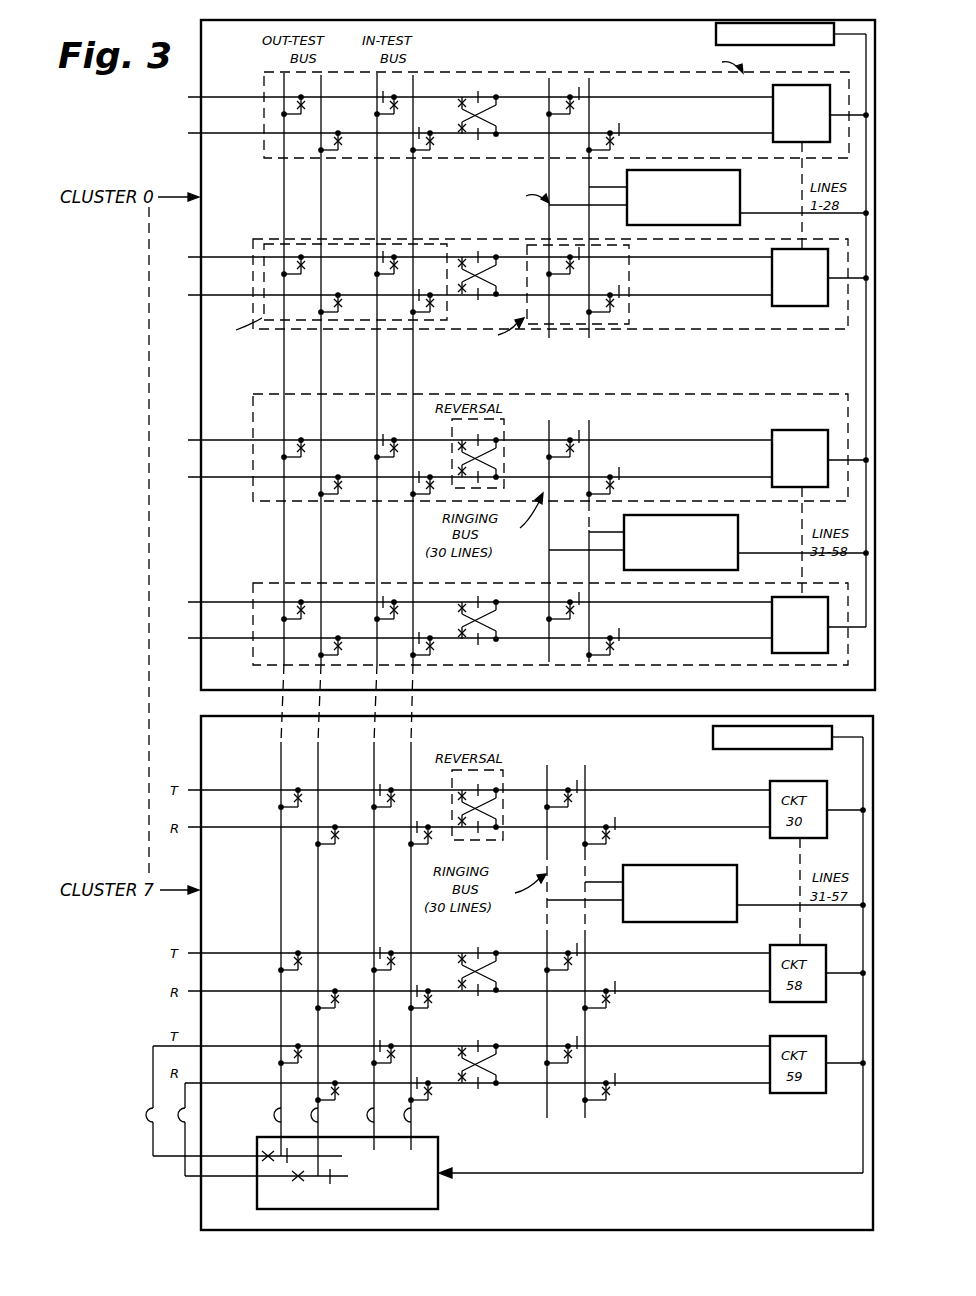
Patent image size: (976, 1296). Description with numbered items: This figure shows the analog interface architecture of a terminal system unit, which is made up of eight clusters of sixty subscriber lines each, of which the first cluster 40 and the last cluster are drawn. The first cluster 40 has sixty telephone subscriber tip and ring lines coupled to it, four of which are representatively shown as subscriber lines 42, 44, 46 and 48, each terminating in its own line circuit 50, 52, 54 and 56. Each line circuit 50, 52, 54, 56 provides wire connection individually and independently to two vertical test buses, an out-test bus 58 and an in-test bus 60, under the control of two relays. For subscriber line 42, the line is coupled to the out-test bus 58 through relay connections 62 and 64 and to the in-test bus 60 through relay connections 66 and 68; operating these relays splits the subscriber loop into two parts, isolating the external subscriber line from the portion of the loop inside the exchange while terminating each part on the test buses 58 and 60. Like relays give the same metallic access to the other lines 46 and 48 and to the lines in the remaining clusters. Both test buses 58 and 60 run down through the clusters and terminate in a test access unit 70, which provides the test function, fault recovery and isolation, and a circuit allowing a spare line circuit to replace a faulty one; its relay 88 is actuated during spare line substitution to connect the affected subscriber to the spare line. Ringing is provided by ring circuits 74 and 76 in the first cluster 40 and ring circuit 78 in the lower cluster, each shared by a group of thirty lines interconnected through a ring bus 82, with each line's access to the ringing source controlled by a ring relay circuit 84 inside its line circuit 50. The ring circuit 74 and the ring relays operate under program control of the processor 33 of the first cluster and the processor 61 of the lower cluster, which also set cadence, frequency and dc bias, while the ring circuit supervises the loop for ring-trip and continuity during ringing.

The processor and memory 33 is at (716, 34).
The cluster 0 40 is at (201, 74).
The subscriber line 42 is at (184, 125).
The subscriber line 44 is at (184, 286).
The subscriber line 46 is at (184, 469).
The subscriber line 48 is at (184, 631).
The line circuit 50 is at (770, 73).
The line circuit 52 is at (795, 330).
The line circuit 54 is at (758, 396).
The line circuit 56 is at (768, 668).
The out-test bus 58 is at (309, 78).
The in-test bus 60 is at (404, 78).
The processor 61 is at (713, 737).
The relay connection 62 is at (298, 112).
The relay connection 64 is at (337, 152).
The relay connection 66 is at (387, 112).
The relay connection 68 is at (422, 152).
The test access unit 70 is at (312, 1173).
The ring circuit 74 is at (740, 195).
The ring circuit 76 is at (738, 536).
The ring circuit 78 is at (737, 889).
The ring bus 82 is at (569, 72).
The ring relay circuit 84 is at (531, 325).
The relay 88 is at (283, 1166).